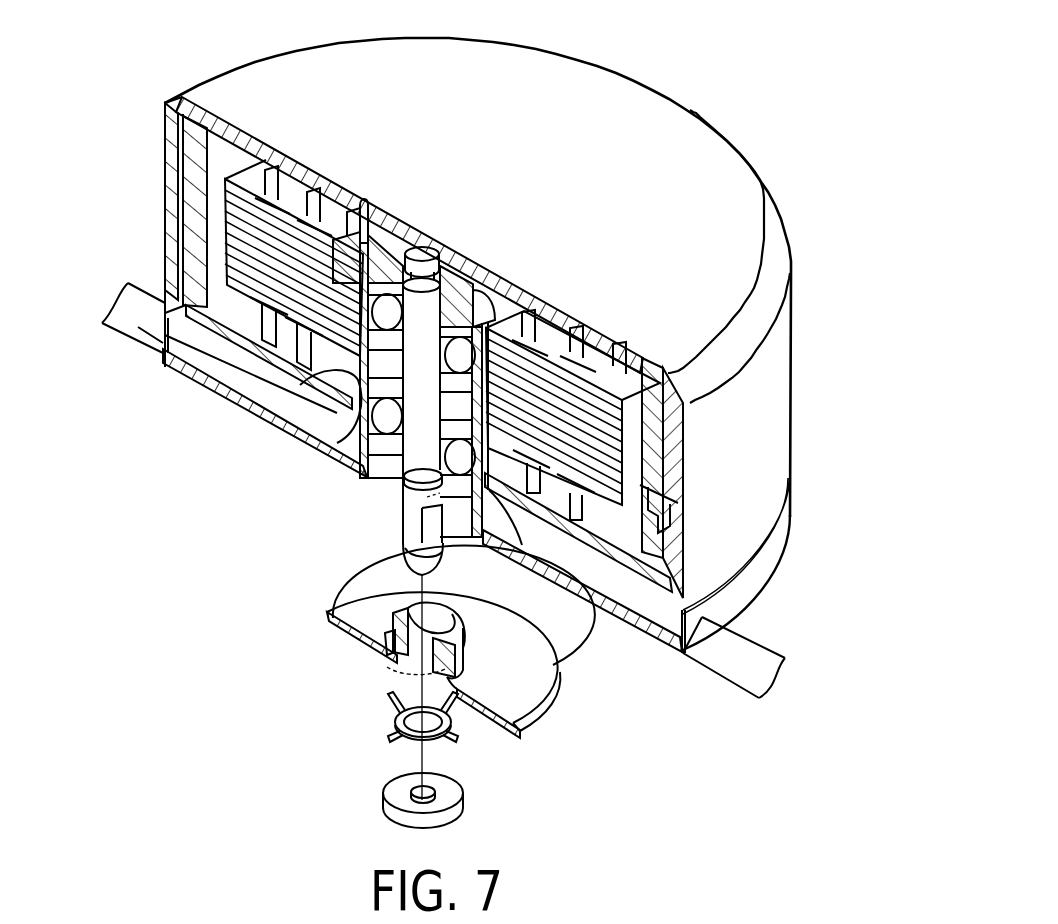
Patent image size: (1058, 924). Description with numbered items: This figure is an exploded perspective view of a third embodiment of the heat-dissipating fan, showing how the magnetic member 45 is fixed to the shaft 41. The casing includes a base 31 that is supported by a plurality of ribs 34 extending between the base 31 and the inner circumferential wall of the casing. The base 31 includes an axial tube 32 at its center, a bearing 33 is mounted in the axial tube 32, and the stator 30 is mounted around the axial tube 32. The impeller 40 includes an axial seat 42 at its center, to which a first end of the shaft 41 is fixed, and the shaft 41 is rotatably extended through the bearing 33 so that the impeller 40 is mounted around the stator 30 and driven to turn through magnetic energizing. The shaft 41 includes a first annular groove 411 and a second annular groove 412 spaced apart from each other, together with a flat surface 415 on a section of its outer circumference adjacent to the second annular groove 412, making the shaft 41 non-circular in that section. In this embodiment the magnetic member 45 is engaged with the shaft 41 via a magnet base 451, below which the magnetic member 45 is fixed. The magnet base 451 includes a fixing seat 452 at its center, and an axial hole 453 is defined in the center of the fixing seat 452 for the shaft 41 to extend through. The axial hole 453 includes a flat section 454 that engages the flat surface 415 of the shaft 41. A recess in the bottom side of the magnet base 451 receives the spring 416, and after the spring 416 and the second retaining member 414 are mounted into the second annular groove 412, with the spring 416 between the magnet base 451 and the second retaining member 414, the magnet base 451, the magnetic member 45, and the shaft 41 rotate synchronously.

The stator 30 is at (228, 228).
The base 31 is at (277, 426).
The axial tube 32 is at (265, 412).
The bearing 33 is at (345, 465).
The ribs 34 is at (135, 327).
The impeller 40 is at (663, 117).
The shaft 41 is at (423, 323).
The axial seat 42 is at (370, 243).
The first annular groove 411 is at (403, 485).
The second annular groove 412 is at (403, 547).
The second retaining member 414 is at (453, 797).
The flat surface 415 is at (437, 527).
The spring 416 is at (417, 740).
The magnetic member 45 is at (327, 620).
The magnet base 451 is at (527, 680).
The fixing seat 452 is at (462, 647).
The axial hole 453 is at (410, 632).
The flat section 454 is at (417, 662).